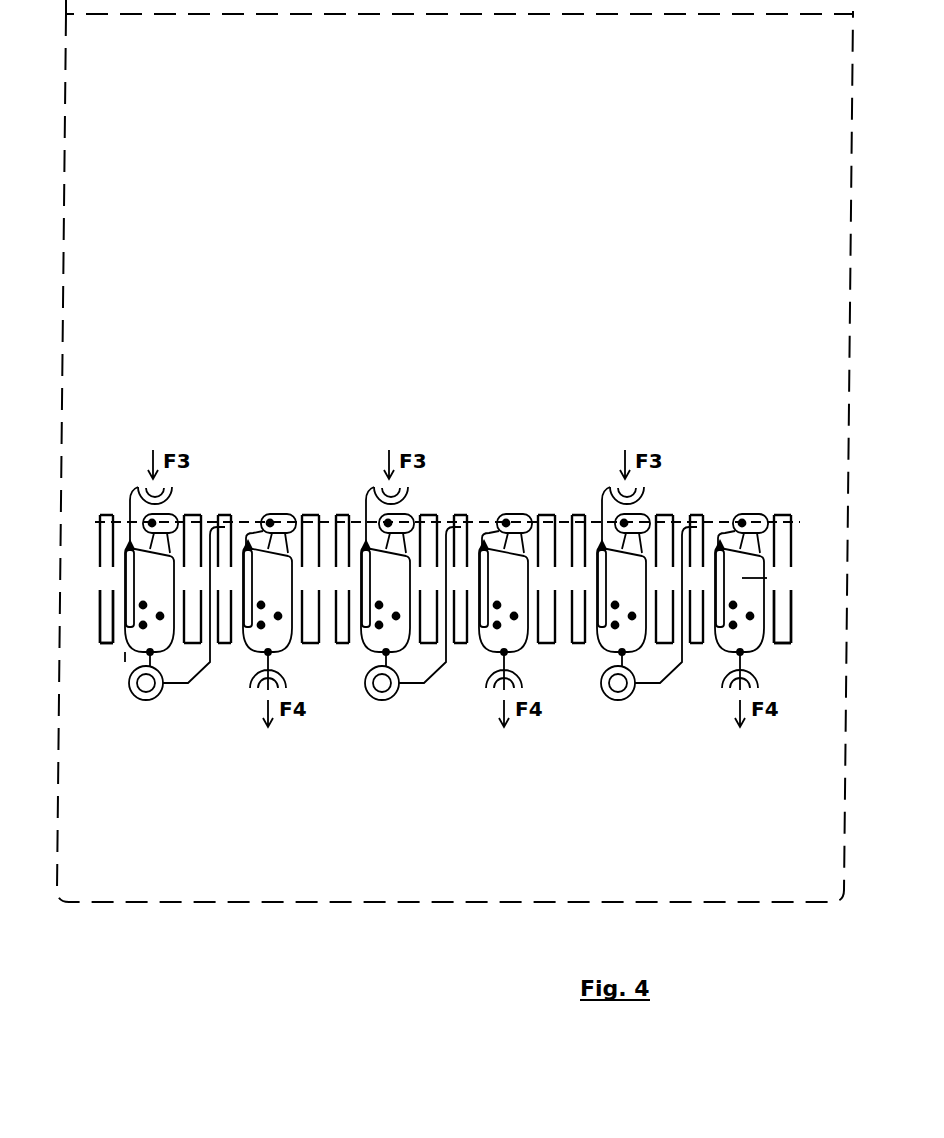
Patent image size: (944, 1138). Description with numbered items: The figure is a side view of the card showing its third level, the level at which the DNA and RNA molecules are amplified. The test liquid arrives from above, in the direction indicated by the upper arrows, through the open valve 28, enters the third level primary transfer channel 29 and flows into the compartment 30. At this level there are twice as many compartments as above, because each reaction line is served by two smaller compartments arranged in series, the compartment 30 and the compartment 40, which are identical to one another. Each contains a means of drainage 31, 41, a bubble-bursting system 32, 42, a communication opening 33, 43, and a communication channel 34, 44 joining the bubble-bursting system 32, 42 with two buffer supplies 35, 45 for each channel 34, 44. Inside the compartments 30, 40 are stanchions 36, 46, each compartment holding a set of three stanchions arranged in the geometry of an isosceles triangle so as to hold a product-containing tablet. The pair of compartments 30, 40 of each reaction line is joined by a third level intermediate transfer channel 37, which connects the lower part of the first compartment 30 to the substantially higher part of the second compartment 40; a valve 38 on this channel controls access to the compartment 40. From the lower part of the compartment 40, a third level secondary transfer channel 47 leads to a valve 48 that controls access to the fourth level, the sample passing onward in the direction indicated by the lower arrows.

The valve 28 is at (233, 418).
The third level primary transfer channel 29 is at (128, 447).
The compartment 30 is at (91, 598).
The means of drainage 31 is at (71, 588).
The bubble-bursting system 32 is at (437, 489).
The communication opening 33 is at (441, 473).
The communication channel 34 is at (668, 468).
The buffer supplies 35 is at (60, 616).
The stanchions 36 is at (103, 727).
The third level intermediate transfer channel 37 is at (212, 672).
The valve 38 is at (157, 757).
The compartment 40 is at (810, 592).
The means of drainage 41 is at (824, 576).
The bubble-bursting system 42 is at (539, 468).
The communication opening 43 is at (541, 449).
The communication channel 44 is at (761, 444).
The buffer supplies 45 is at (840, 616).
The stanchions 46 is at (818, 625).
The third level secondary transfer channel 47 is at (663, 707).
The valve 48 is at (672, 748).